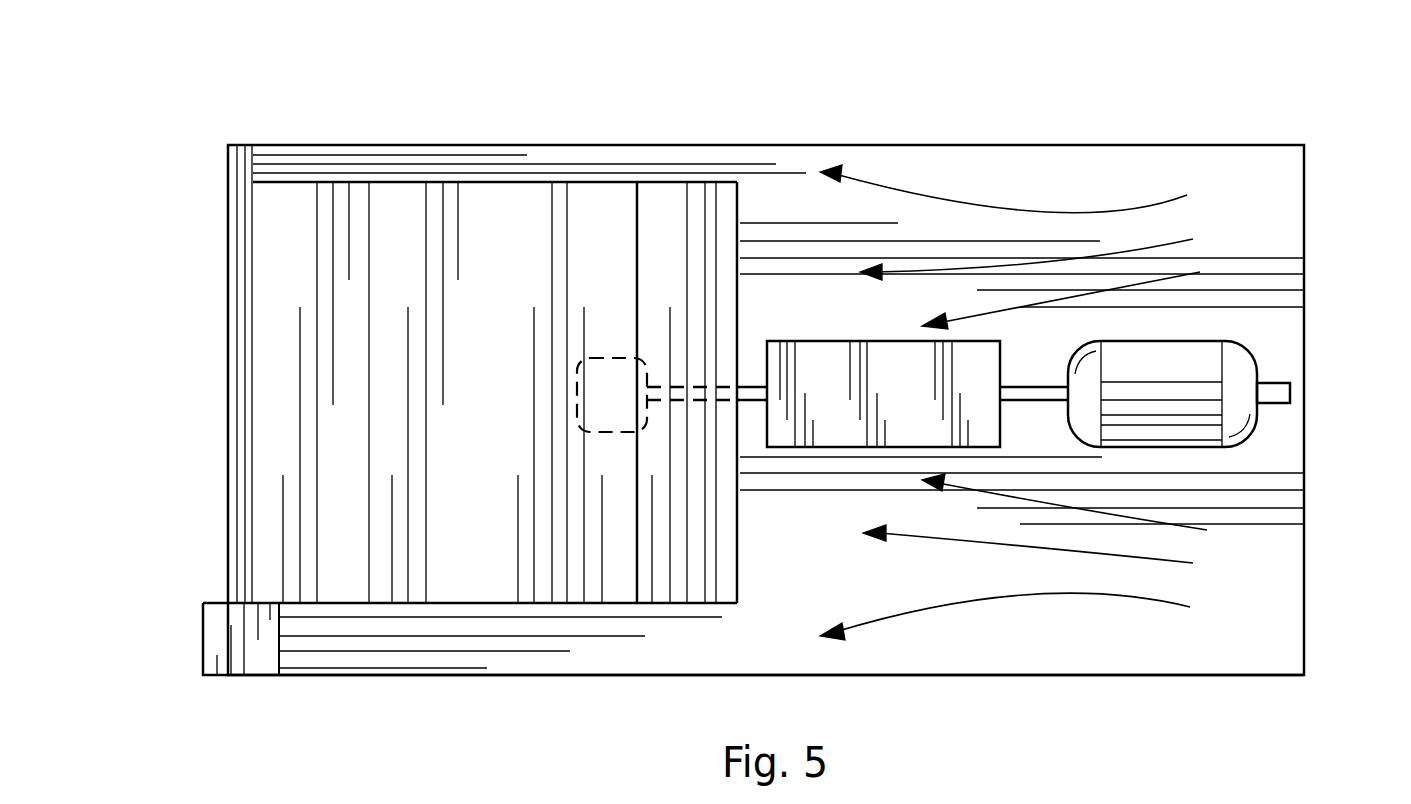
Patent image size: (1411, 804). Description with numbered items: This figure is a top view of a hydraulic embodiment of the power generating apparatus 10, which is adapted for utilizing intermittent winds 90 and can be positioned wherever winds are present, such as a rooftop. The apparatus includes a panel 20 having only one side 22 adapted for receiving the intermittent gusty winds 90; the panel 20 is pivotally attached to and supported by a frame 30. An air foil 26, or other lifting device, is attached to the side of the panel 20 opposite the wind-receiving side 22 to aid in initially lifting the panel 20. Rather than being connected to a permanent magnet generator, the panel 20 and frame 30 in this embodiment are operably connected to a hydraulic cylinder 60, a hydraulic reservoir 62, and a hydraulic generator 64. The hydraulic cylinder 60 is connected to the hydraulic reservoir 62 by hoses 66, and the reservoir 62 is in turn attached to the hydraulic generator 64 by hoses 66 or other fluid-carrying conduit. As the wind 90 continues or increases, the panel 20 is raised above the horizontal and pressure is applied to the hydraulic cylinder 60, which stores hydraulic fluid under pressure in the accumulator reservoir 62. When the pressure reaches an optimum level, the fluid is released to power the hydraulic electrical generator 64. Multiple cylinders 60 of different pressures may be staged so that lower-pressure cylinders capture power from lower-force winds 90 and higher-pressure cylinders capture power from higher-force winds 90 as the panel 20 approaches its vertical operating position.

The power generating apparatus 10 is at (201, 165).
The panel 20 is at (340, 220).
The side 22 is at (490, 165).
The air foil 26 is at (660, 220).
The frame 30 is at (517, 642).
The hydraulic cylinder 60 is at (603, 375).
The hydraulic reservoir 62 is at (890, 365).
The hydraulic generator 64 is at (1193, 370).
The hoses 66 is at (752, 380).
The wind 90 is at (1133, 195).